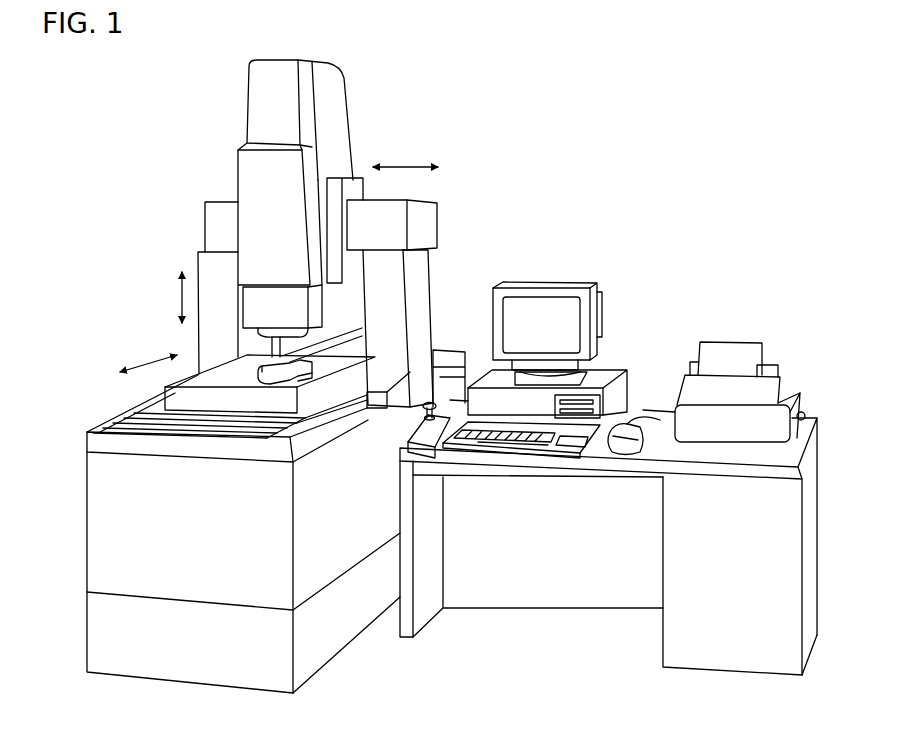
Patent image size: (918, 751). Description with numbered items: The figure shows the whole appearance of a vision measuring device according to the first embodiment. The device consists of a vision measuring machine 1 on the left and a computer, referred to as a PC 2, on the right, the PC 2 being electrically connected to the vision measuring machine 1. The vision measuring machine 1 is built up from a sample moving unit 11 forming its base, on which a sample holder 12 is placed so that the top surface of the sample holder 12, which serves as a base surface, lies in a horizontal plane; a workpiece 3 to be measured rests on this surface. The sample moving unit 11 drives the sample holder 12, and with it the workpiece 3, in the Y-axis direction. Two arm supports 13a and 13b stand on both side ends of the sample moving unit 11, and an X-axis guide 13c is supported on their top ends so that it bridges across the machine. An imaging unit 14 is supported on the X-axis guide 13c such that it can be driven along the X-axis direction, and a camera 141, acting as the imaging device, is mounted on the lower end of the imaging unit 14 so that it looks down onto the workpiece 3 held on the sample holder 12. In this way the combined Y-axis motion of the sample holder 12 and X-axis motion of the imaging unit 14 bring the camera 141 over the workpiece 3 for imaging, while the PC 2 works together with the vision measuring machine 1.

The vision measuring machine 1 is at (367, 82).
The computer (PC) 2 is at (608, 273).
The workpiece 3 is at (293, 375).
The sample moving unit 11 is at (160, 410).
The sample holder 12 is at (237, 368).
The arm support 13a is at (420, 297).
The arm support 13b is at (197, 268).
The X-axis guide 13c is at (213, 200).
The imaging unit 14 is at (248, 97).
The camera 141 is at (287, 342).